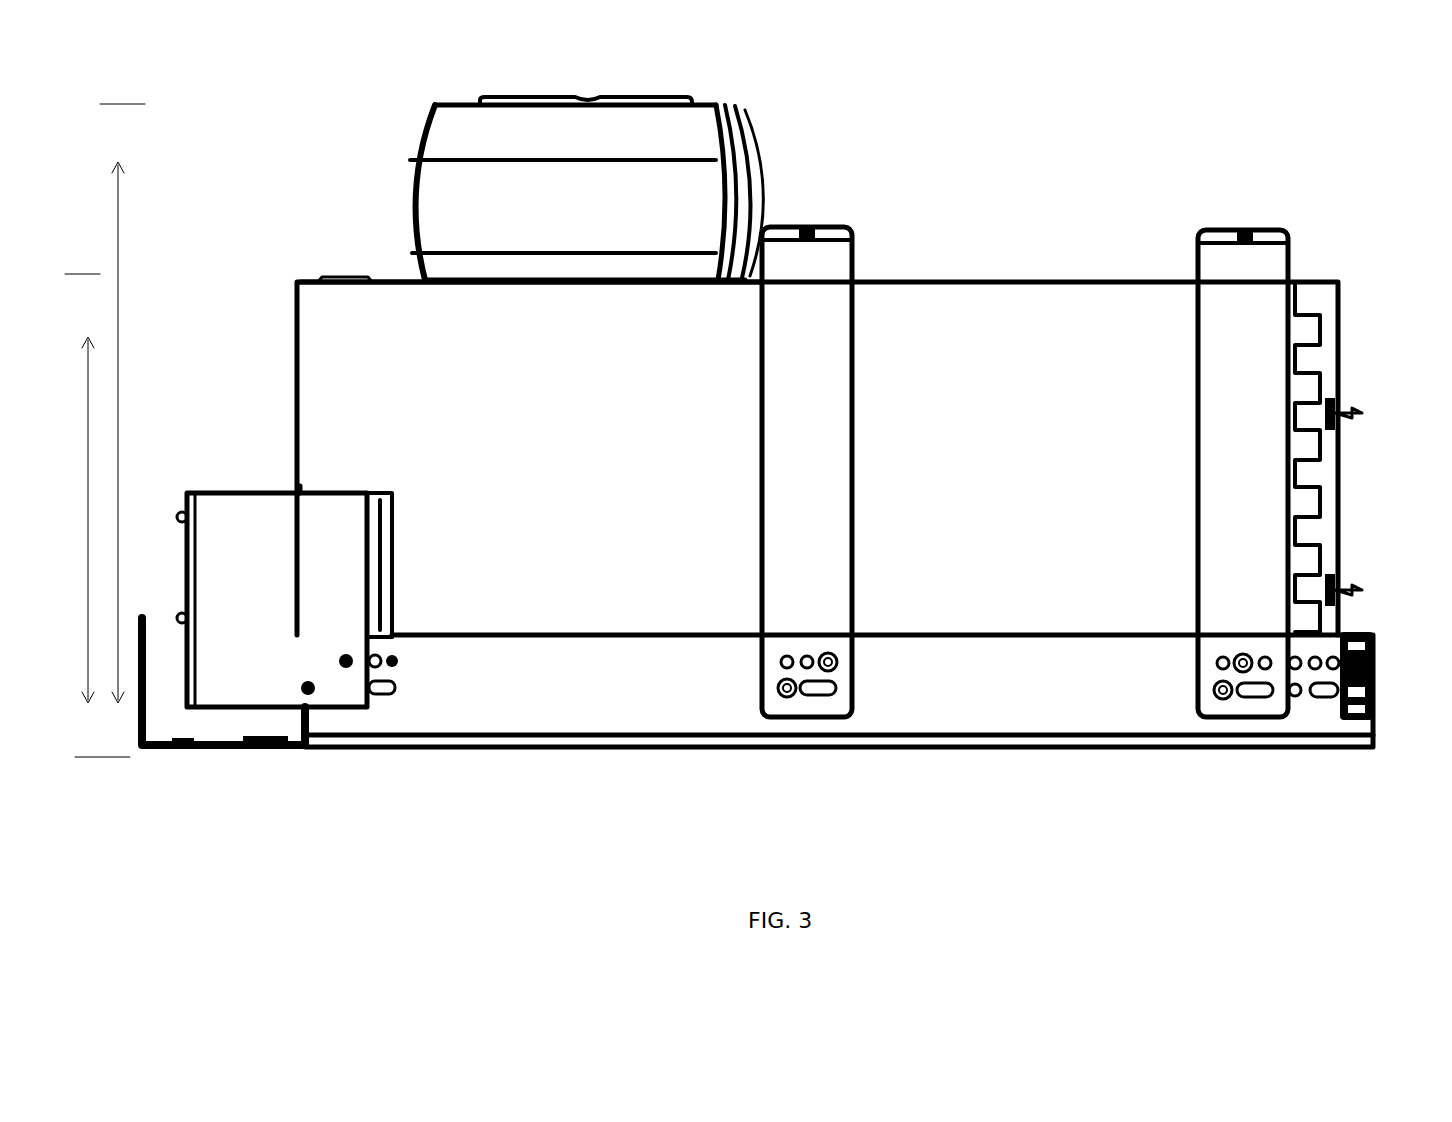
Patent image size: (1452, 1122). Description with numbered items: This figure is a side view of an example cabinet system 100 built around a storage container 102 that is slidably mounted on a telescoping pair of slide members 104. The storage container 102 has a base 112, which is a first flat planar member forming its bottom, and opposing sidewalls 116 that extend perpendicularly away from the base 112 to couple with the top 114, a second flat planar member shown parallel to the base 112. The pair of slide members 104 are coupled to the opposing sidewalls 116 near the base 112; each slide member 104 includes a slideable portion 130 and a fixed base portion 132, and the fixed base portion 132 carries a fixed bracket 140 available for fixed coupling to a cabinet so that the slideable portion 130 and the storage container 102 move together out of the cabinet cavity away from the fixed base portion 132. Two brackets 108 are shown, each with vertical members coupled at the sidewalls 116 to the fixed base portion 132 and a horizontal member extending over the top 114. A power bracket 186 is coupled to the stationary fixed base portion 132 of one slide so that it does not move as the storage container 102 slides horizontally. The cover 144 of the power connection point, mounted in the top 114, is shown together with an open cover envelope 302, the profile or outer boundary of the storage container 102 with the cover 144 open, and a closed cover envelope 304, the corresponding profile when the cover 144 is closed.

The cabinet system 100 is at (1052, 78).
The storage container 102 is at (297, 365).
The slide members 104 is at (476, 713).
The bracket 108 is at (1178, 676).
The base 112 is at (645, 745).
The top 114 is at (398, 275).
The sidewalls 116 is at (1005, 385).
The slideable portion 130 is at (1373, 720).
The fixed base portion 132 is at (577, 700).
The fixed bracket 140 is at (180, 750).
The cover 144 is at (690, 128).
The power bracket 186 is at (262, 545).
The open cover envelope 302 is at (118, 297).
The closed cover envelope 304 is at (88, 383).